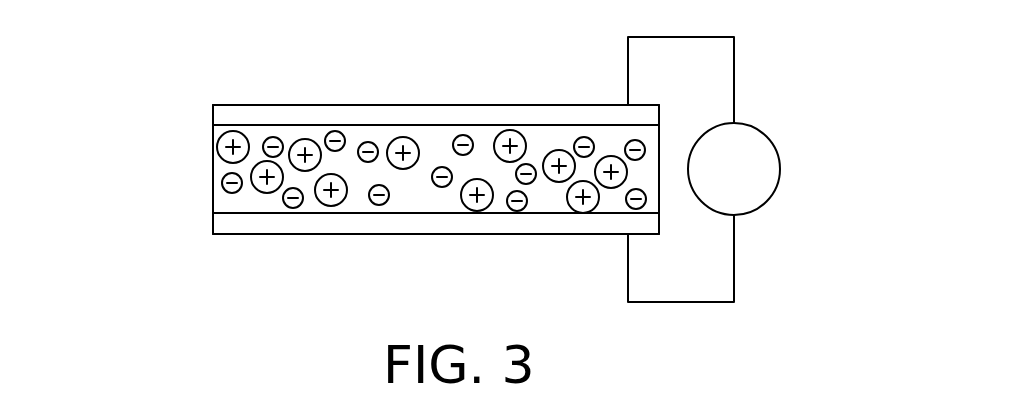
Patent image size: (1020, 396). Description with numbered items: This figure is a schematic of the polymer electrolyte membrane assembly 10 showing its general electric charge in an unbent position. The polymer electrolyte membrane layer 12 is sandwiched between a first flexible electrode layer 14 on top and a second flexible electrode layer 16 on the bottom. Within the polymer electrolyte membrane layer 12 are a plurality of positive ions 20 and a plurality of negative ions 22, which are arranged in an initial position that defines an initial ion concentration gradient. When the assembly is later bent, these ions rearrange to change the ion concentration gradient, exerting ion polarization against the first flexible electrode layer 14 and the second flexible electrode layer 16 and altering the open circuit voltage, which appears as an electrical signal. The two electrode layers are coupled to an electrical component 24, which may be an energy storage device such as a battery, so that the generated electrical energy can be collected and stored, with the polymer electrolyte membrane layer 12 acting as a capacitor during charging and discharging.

The polymer electrolyte membrane assembly 10 is at (229, 271).
The polymer electrolyte membrane layer 12 is at (217, 204).
The first flexible electrode layer 14 is at (216, 109).
The second flexible electrode layer 16 is at (217, 224).
The positive ions 20 is at (403, 137).
The negative ions 22 is at (380, 206).
The electrical component 24 is at (767, 135).